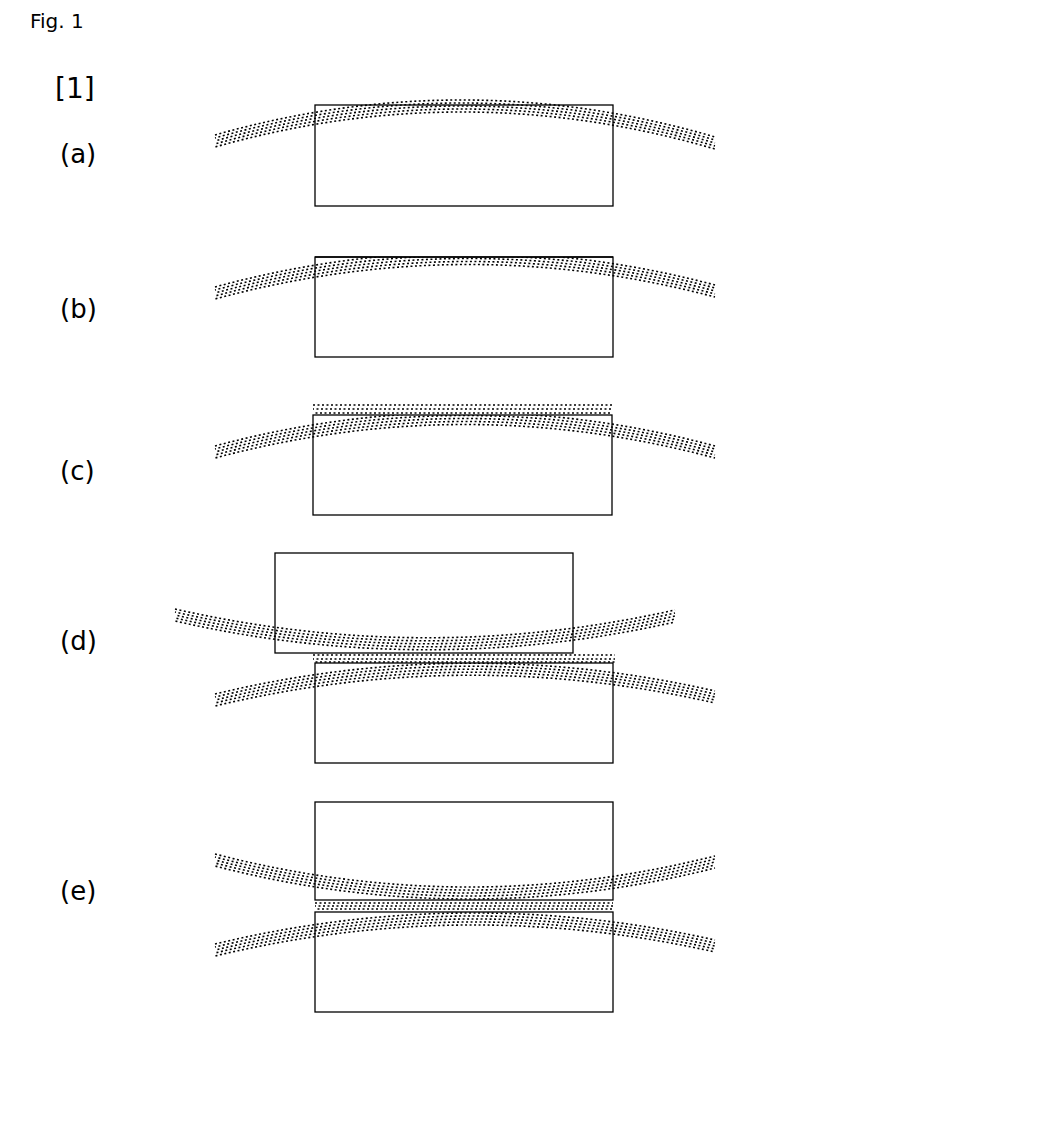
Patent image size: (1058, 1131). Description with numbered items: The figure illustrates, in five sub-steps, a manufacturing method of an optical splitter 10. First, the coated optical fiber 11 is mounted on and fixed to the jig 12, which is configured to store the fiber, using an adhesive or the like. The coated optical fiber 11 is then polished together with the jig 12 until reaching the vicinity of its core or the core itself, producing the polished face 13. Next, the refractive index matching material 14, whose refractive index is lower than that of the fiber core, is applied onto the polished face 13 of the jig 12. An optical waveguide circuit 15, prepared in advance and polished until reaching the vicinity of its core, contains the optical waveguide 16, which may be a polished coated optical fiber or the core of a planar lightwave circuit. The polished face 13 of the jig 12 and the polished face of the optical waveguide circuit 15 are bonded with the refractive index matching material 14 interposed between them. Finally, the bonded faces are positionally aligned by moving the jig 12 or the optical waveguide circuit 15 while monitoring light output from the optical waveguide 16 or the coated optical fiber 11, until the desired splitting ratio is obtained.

The optical splitter 10 is at (828, 888).
The coated optical fiber 11 is at (662, 123).
The jig 12 is at (613, 197).
The polished face 13 is at (583, 257).
The refractive index matching material 14 is at (612, 410).
The optical waveguide circuit 15 is at (573, 570).
The optical waveguide 16 is at (680, 610).